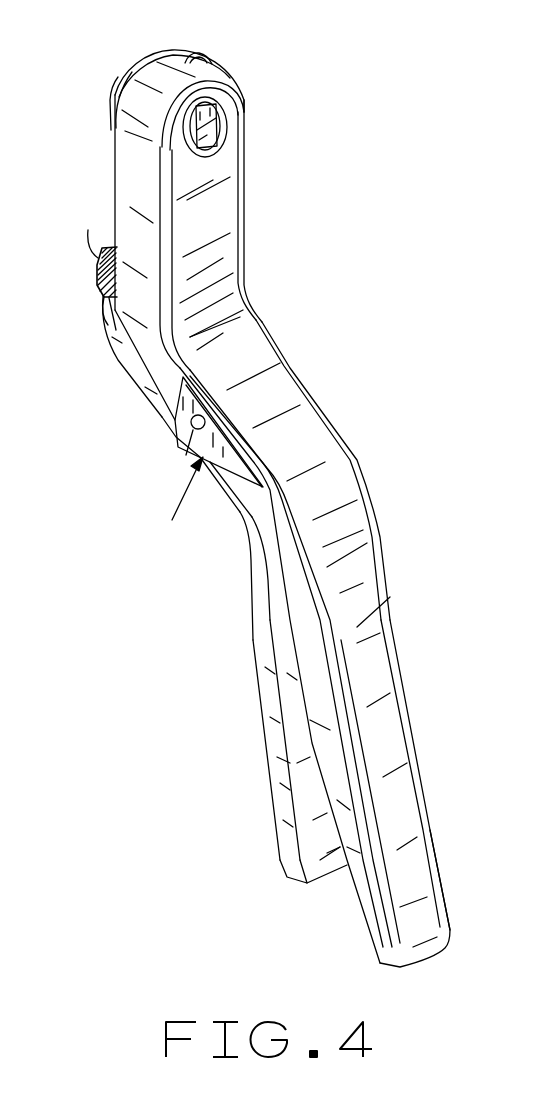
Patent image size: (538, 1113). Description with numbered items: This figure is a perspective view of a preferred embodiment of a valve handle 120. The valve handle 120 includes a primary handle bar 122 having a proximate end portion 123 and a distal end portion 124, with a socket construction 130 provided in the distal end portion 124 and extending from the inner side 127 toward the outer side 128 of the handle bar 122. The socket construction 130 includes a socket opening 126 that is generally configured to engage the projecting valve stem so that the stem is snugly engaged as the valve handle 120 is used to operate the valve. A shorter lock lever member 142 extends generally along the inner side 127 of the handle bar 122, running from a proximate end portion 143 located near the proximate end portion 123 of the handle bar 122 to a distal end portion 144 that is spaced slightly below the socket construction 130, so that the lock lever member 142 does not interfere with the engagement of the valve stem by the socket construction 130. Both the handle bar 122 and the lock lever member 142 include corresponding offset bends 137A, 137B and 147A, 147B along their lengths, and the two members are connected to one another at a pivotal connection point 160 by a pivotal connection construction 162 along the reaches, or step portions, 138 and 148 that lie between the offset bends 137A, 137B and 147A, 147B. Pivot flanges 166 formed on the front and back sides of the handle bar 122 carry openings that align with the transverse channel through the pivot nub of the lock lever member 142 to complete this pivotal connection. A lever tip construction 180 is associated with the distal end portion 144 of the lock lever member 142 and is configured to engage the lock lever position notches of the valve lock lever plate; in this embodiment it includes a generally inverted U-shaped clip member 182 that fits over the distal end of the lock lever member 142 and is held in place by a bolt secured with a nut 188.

The valve handle 120 is at (233, 64).
The primary handle bar 122 is at (360, 623).
The proximate end portion 123 is at (417, 853).
The distal end portion 124 is at (150, 168).
The socket opening 126 is at (224, 118).
The inner side 127 is at (116, 200).
The outer side 128 is at (210, 219).
The socket construction 130 is at (125, 64).
The offset bend 137A is at (327, 477).
The offset bend 137B is at (245, 298).
The step portion 138 is at (283, 380).
The lock lever member 142 is at (268, 750).
The proximate end portion 143 is at (280, 831).
The distal end portion 144 is at (107, 327).
The offset bend 147A is at (240, 547).
The offset bend 147B is at (120, 360).
The step portion 148 is at (182, 431).
The pivotal connection point 160 is at (166, 497).
The pivotal connection construction 162 is at (197, 429).
The pivot flange 166 is at (190, 421).
The lever tip construction 180 is at (100, 274).
The clip member 182 is at (103, 246).
The nut 188 is at (99, 288).